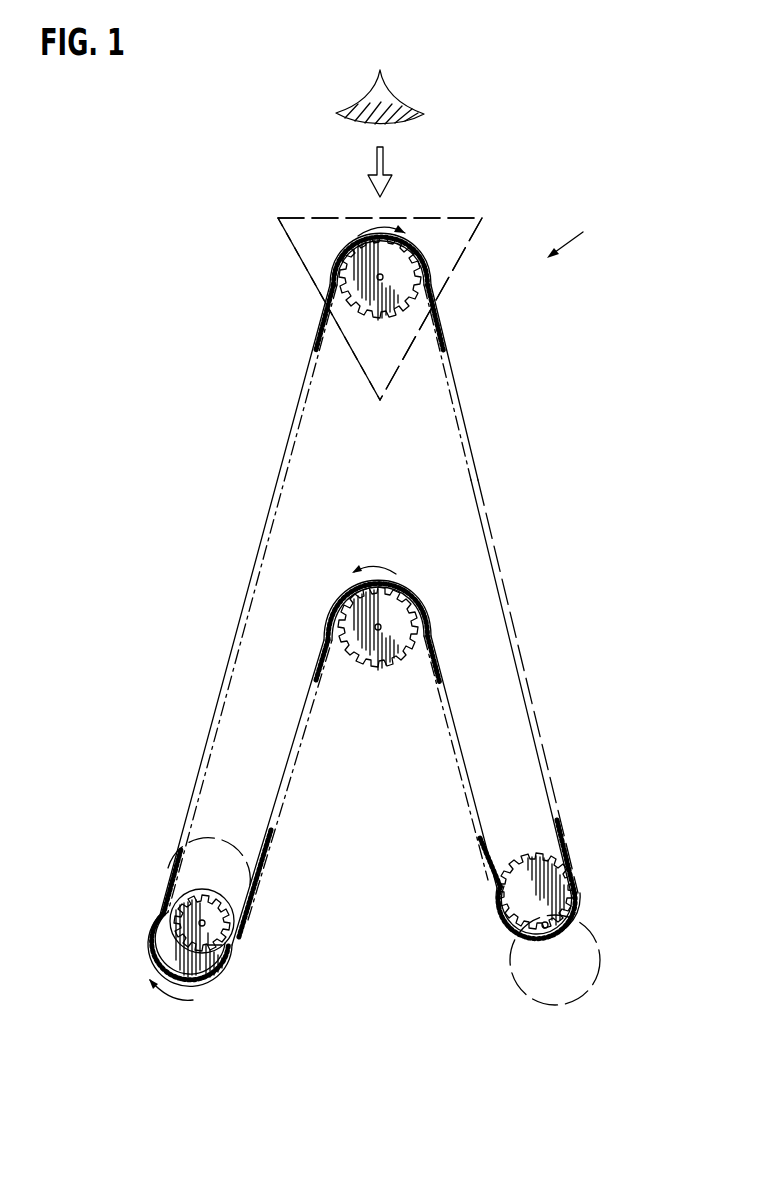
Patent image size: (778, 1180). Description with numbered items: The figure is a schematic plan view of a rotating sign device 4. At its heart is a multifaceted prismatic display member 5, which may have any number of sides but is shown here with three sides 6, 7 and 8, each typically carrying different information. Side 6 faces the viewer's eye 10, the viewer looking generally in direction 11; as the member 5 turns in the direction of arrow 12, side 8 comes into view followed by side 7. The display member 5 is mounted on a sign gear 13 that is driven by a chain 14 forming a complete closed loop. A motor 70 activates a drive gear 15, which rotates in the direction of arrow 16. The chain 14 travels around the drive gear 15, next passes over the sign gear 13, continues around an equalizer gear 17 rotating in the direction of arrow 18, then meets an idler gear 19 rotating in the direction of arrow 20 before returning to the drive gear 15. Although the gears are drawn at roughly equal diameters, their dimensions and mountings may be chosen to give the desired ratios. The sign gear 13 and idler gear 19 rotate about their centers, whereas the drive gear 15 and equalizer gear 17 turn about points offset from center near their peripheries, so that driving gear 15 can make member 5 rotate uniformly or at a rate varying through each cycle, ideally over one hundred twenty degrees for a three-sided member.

The device 4 is at (576, 234).
The multifaceted prismatic display member 5 is at (478, 226).
The side 6 is at (412, 220).
The side 7 is at (441, 293).
The side 8 is at (313, 289).
The viewer's eye 10 is at (389, 100).
The direction 11 is at (382, 150).
The arrow 12 is at (370, 227).
The sign gear 13 is at (380, 306).
The chain 14 is at (474, 477).
The drive gear 15 is at (156, 942).
The arrow 16 is at (172, 999).
The equalizer gear 17 is at (498, 922).
The arrow 18 is at (580, 912).
The idler gear 19 is at (378, 668).
The arrow 20 is at (392, 563).
The motor 70 is at (211, 895).